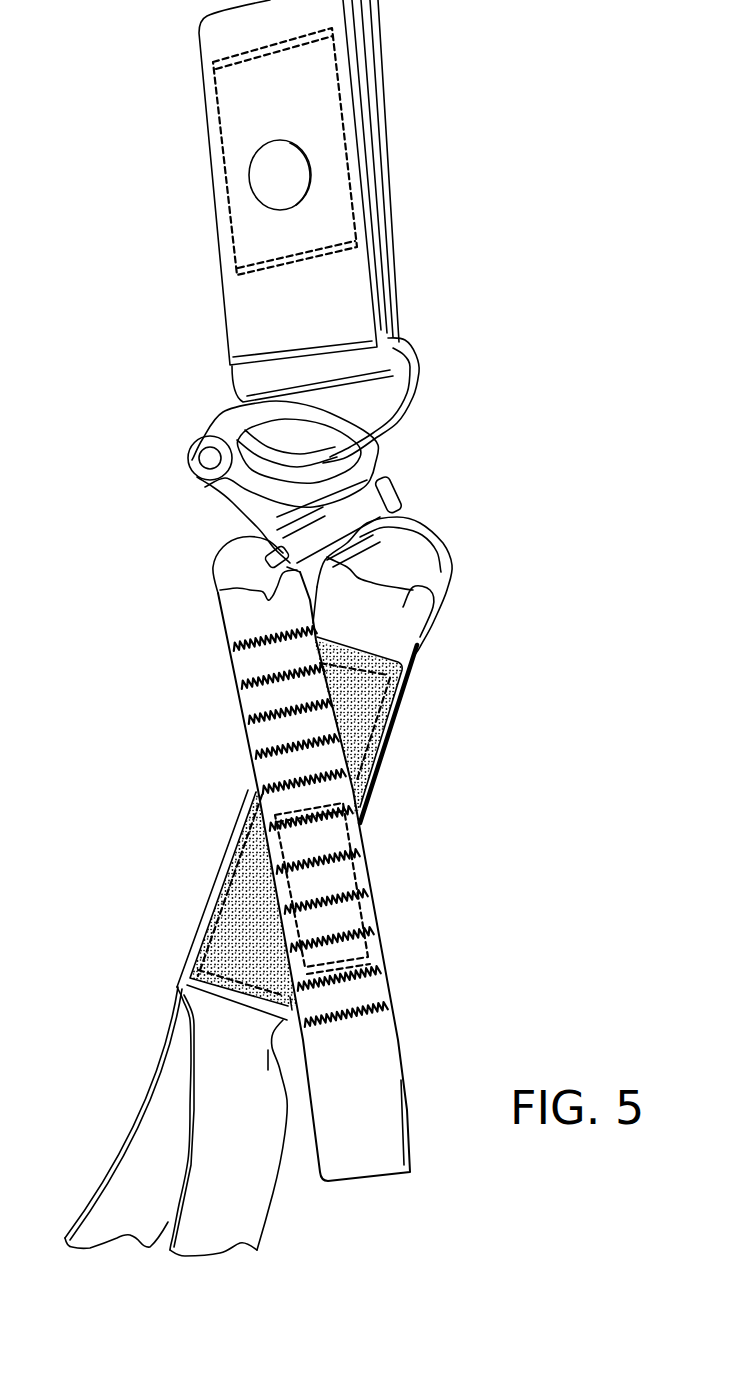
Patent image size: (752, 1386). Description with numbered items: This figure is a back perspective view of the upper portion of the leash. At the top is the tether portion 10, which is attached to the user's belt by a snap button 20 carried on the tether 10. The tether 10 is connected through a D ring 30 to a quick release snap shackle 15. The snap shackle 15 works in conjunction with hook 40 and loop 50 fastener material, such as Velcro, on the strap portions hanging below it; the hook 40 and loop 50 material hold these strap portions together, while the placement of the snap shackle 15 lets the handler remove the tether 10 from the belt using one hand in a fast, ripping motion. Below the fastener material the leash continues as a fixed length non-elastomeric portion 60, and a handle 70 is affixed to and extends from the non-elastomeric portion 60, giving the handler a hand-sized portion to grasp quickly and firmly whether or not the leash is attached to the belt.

The tether portion 10 is at (385, 52).
The quick release snap shackle 15 is at (230, 428).
The snap button 20 is at (273, 173).
The D ring 30 is at (413, 418).
The hook fastener material 40 is at (258, 902).
The loop fastener material 50 is at (338, 883).
The fixed length non-elastomeric portion 60 is at (127, 1163).
The handle 70 is at (237, 1182).